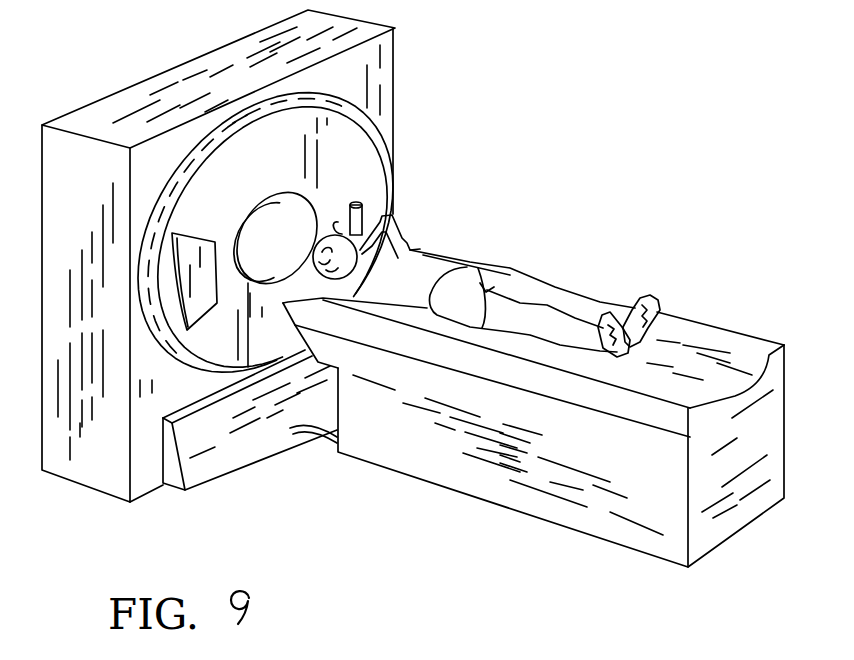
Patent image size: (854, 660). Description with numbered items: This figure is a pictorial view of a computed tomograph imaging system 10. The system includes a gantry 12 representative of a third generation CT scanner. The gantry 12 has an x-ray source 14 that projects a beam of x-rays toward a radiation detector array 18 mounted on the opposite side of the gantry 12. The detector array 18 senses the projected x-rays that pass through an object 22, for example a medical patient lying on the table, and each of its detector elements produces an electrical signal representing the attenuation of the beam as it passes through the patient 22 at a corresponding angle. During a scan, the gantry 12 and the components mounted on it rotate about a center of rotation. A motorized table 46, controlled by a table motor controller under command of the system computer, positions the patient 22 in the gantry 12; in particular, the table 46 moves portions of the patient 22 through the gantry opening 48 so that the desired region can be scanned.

The imaging system 10 is at (307, 457).
The gantry 12 is at (208, 134).
The x-ray source 14 is at (365, 208).
The radiation detector array 18 is at (193, 313).
The object 22 is at (420, 243).
The motorized table 46 is at (423, 453).
The gantry opening 48 is at (307, 200).